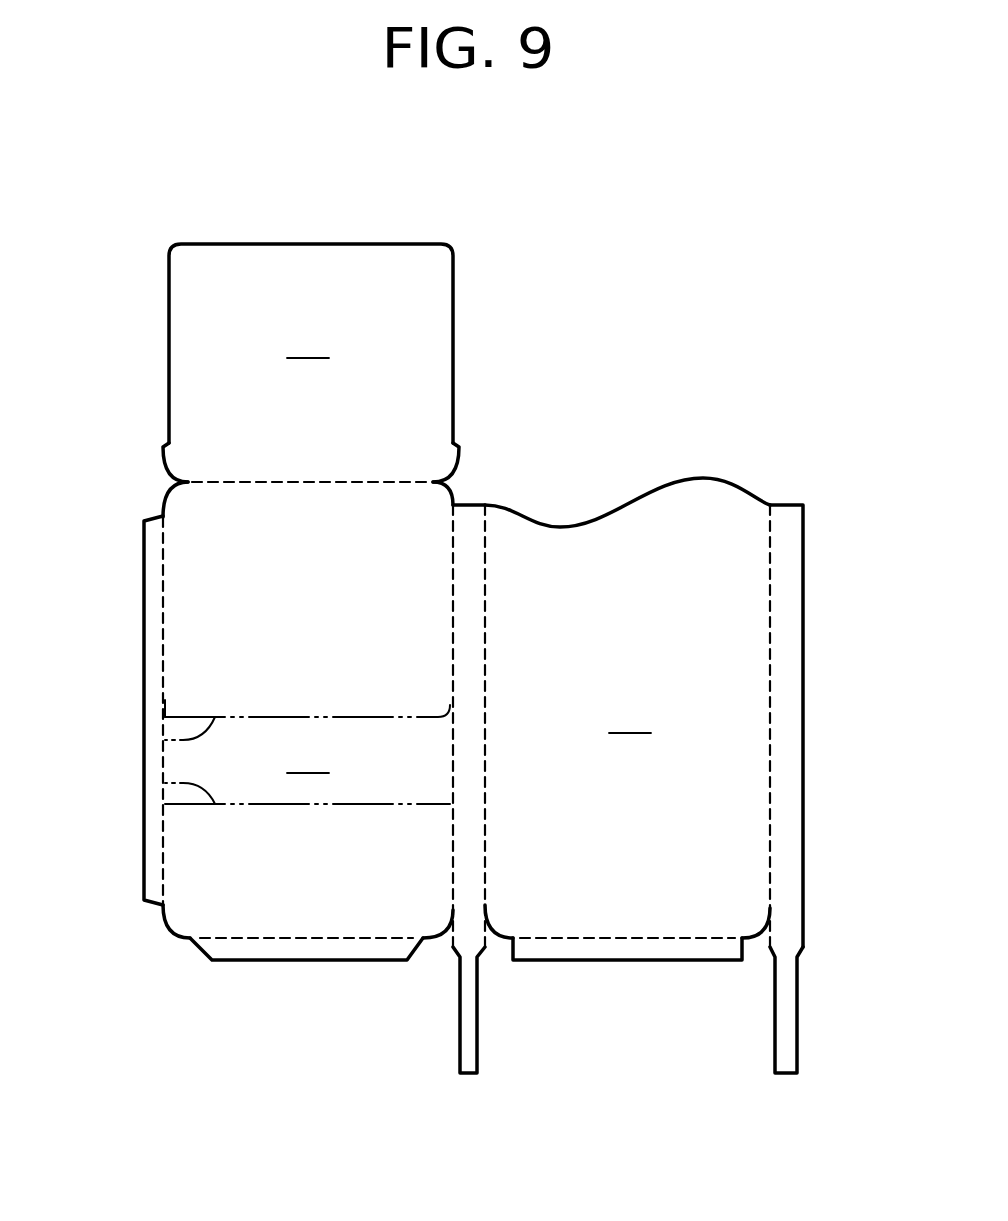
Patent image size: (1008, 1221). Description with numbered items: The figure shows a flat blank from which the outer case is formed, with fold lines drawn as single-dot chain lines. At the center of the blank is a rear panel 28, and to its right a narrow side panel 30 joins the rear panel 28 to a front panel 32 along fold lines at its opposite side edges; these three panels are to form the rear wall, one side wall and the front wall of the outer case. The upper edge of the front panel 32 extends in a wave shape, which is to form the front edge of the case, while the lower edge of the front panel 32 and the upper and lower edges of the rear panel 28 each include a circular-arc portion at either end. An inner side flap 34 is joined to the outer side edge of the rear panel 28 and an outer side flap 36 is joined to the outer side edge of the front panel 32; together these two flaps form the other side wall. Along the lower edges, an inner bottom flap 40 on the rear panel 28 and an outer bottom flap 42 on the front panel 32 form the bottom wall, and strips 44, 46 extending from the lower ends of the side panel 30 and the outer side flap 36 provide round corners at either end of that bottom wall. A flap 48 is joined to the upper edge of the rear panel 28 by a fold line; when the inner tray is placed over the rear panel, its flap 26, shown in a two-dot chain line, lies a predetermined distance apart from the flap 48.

The flap 26 is at (160, 787).
The rear panel 28 is at (308, 710).
The side panel 30 is at (470, 505).
The front panel 32 is at (627, 708).
The inner side flap 34 is at (144, 765).
The outer side flap 36 is at (804, 722).
The inner bottom flap 40 is at (307, 965).
The outer bottom flap 42 is at (633, 965).
The strip 44 is at (457, 1023).
The strip 46 is at (800, 1010).
The flap 48 is at (165, 738).